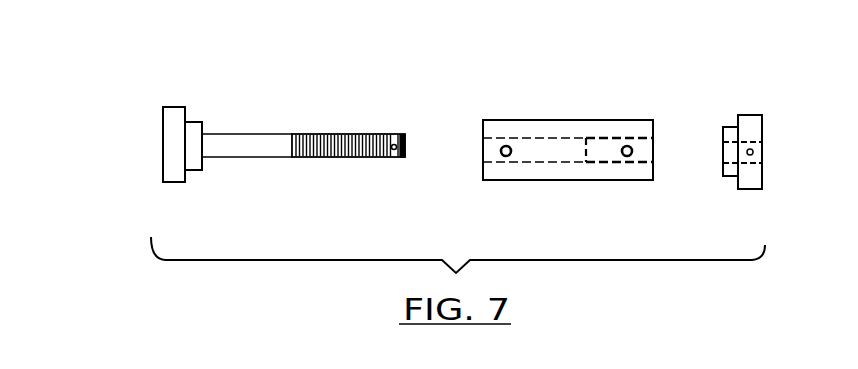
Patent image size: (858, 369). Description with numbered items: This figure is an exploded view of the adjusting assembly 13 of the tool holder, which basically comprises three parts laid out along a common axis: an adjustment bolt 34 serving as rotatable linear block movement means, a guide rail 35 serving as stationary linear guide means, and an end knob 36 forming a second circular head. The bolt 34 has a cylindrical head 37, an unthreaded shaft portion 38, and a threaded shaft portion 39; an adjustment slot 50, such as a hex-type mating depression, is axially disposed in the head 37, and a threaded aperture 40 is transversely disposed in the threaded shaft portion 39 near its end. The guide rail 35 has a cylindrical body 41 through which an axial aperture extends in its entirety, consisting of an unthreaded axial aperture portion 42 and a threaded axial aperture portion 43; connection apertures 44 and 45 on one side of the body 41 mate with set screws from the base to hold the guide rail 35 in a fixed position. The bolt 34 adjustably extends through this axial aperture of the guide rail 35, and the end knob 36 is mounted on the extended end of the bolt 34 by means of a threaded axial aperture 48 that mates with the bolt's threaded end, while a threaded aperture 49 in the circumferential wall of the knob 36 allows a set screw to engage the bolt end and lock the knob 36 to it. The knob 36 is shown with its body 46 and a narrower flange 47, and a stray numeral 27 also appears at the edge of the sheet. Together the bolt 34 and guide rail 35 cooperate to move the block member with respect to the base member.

The adjusting assembly 13 is at (752, 52).
The frame member 27 is at (18, 368).
The adjustment bolt 34 is at (313, 112).
The guide rail 35 is at (612, 106).
The end knob 36 is at (763, 104).
The cylindrical head 37 is at (176, 107).
The unthreaded shaft portion 38 is at (240, 158).
The threaded shaft portion 39 is at (370, 160).
The threaded aperture 40 is at (397, 140).
The cylindrical body 41 is at (552, 178).
The unthreaded axial aperture portion 42 is at (555, 138).
The threaded axial aperture portion 43 is at (627, 165).
The connection aperture 44 is at (508, 143).
The connection aperture 45 is at (637, 141).
The nut body 46 is at (752, 190).
The nut flange 47 is at (727, 177).
The threaded axial aperture 48 is at (755, 147).
The threaded aperture 49 is at (762, 155).
The adjustment slot 50 is at (163, 145).